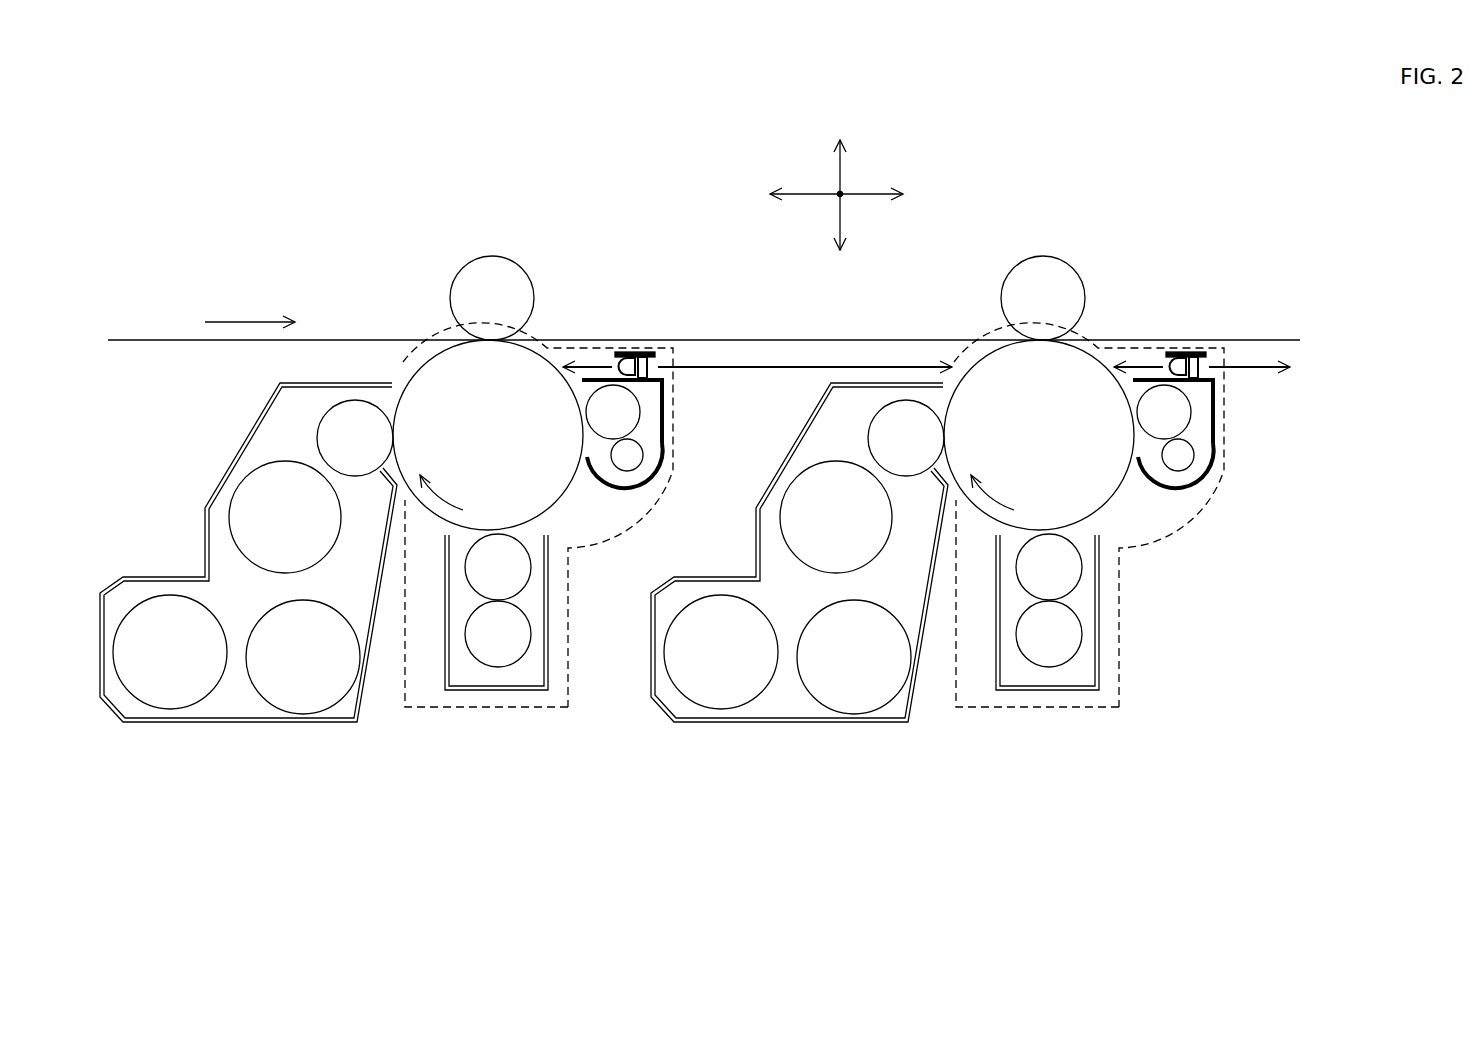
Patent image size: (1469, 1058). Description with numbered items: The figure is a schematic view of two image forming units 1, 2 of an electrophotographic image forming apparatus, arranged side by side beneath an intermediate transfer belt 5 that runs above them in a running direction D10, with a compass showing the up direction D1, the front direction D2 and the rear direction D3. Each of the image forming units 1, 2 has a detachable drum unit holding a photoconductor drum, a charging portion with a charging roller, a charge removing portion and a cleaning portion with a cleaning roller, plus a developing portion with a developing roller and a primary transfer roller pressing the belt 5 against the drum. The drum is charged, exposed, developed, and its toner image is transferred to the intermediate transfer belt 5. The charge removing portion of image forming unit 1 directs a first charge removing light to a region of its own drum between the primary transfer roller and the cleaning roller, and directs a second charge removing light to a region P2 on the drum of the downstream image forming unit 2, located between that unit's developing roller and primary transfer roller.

The image forming unit 1 is at (398, 735).
The image forming unit 2 is at (973, 530).
The intermediate transfer belt 5 is at (185, 340).
The up direction D1 is at (847, 168).
The front direction D2 is at (813, 200).
The rear direction D3 is at (840, 190).
The running direction D10 is at (228, 321).
The region P2 is at (990, 385).